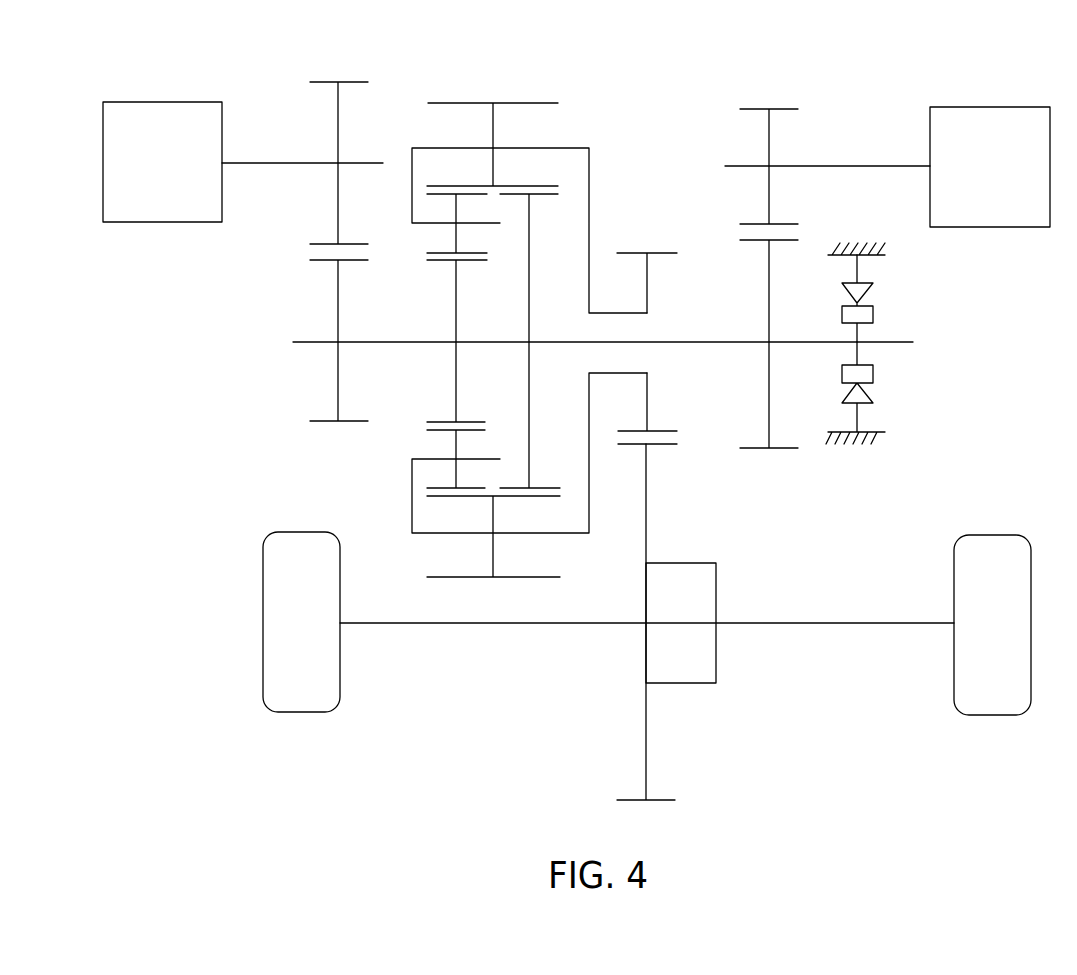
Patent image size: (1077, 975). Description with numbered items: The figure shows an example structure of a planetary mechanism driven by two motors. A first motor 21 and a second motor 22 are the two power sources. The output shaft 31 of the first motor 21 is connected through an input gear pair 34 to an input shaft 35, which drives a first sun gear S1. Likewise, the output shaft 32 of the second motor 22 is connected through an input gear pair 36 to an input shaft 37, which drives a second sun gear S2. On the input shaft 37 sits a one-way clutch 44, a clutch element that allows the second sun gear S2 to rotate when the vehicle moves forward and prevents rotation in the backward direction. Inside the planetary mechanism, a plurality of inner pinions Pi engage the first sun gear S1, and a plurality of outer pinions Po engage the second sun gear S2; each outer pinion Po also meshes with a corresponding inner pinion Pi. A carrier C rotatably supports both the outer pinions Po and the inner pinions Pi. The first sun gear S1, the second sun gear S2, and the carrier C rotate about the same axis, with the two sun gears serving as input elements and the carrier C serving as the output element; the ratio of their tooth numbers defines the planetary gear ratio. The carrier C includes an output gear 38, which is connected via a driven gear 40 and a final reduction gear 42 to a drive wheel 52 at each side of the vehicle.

The first motor 21 is at (188, 100).
The second motor 22 is at (1018, 104).
The output shaft 31 is at (265, 168).
The output shaft 32 is at (880, 169).
The input gear pair 34 is at (326, 57).
The input shaft 35 is at (301, 345).
The input gear pair 36 is at (761, 97).
The input shaft 37 is at (905, 346).
The output gear 38 is at (650, 243).
The driven gear 40 is at (664, 788).
The final reduction gear 42 is at (695, 560).
The one-way clutch 44 is at (885, 299).
The drive wheel 52 is at (294, 715).
The outer pinions Po is at (483, 113).
The inner pinions Pi is at (438, 242).
The first sun gear S1 is at (440, 270).
The second sun gear S2 is at (537, 205).
The carrier C is at (578, 138).